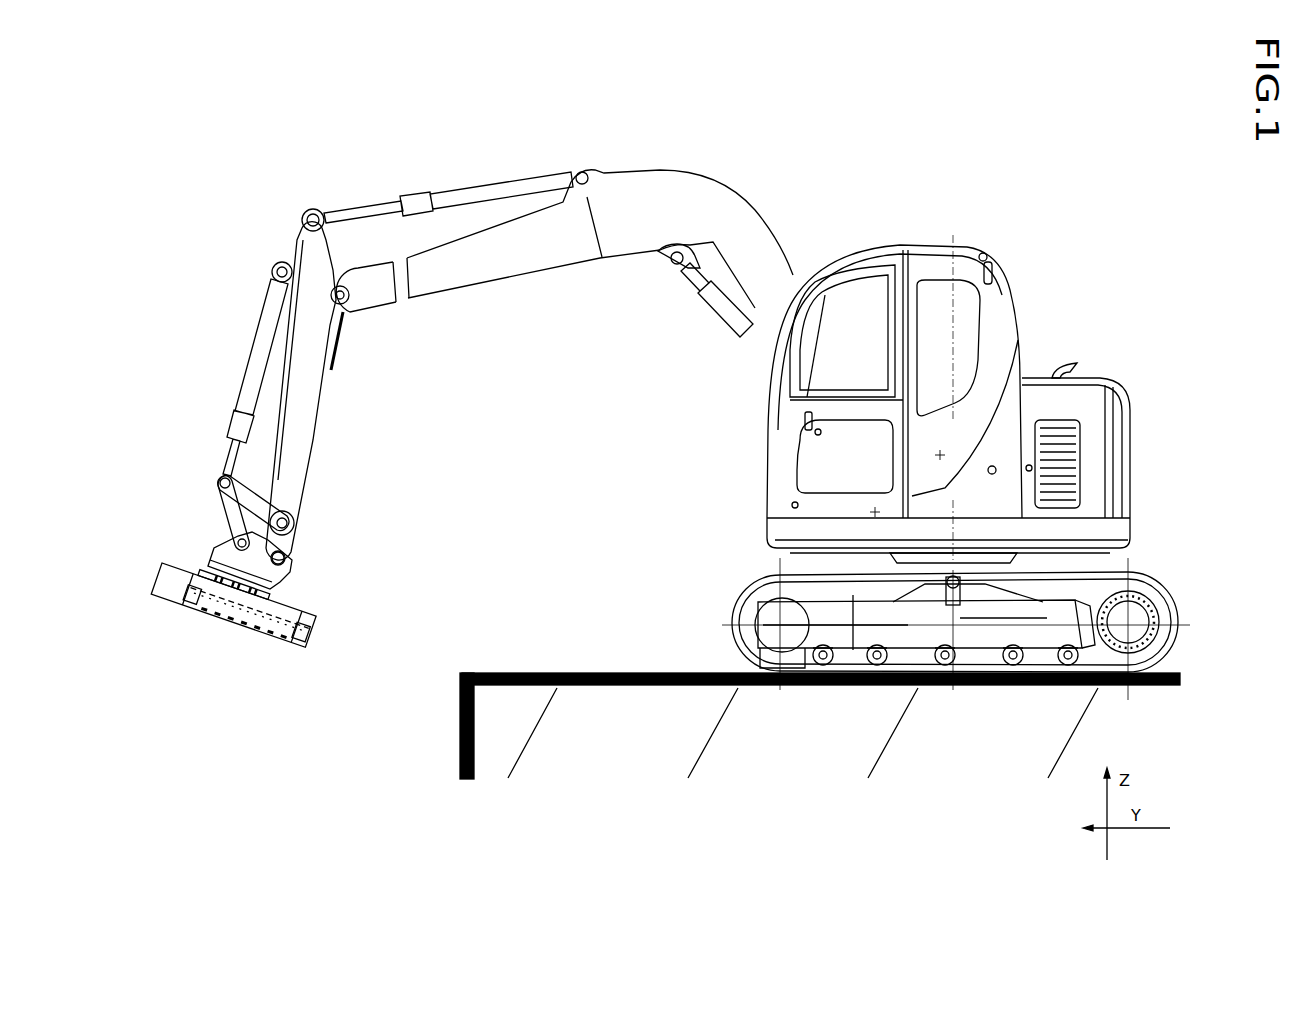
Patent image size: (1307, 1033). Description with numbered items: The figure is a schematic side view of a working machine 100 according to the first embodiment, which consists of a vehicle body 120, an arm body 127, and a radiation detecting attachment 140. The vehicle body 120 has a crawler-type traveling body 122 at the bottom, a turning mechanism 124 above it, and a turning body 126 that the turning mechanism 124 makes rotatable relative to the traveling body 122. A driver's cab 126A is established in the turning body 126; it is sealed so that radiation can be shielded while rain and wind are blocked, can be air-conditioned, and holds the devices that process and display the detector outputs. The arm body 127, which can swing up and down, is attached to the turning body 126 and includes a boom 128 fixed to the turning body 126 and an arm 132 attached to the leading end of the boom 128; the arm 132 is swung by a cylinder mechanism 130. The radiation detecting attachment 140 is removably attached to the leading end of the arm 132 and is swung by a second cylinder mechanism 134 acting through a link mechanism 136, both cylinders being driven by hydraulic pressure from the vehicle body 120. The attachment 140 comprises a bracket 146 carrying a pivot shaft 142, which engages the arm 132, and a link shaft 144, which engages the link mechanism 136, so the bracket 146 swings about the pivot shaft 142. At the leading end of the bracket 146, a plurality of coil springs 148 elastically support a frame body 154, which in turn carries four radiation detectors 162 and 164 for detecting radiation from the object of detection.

The working machine 100 is at (1010, 265).
The vehicle body 120 is at (1054, 357).
The crawler-type traveling body 122 is at (1063, 593).
The turning mechanism 124 is at (937, 555).
The turning body 126 is at (1003, 430).
The driver's cab 126A is at (858, 385).
The arm body 127 is at (613, 147).
The boom 128 is at (706, 196).
The cylinder mechanism 130 is at (455, 193).
The arm 132 is at (296, 426).
The cylinder mechanism 134 is at (262, 350).
The link mechanism 136 is at (236, 512).
The radiation detecting attachment 140 is at (303, 592).
The pivot shaft 142 is at (286, 559).
The link shaft 144 is at (228, 537).
The bracket 146 is at (218, 553).
The coil springs 148 is at (213, 577).
The frame body 154 is at (247, 611).
The radiation detector 162 is at (300, 643).
The radiation detector 164 is at (192, 590).